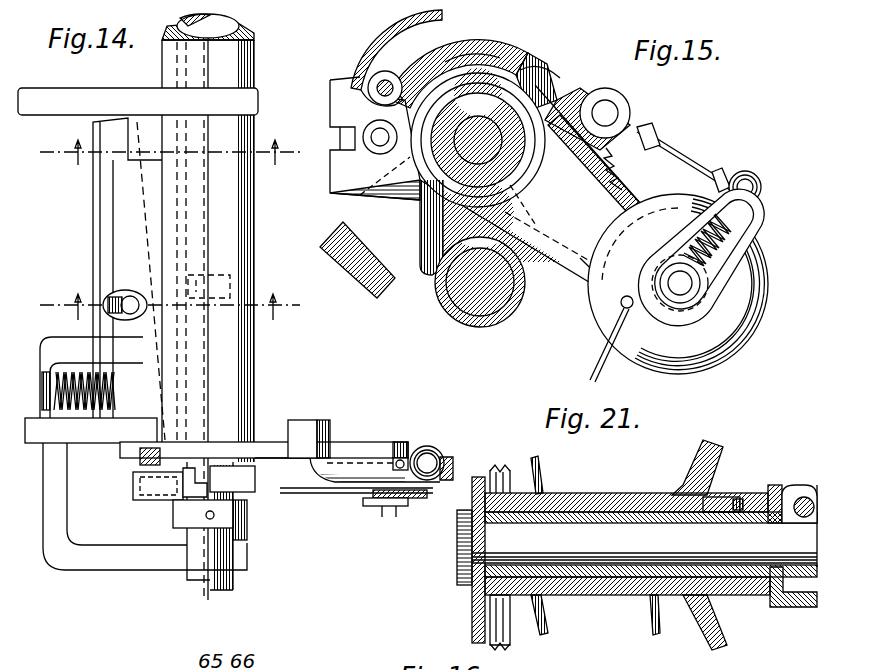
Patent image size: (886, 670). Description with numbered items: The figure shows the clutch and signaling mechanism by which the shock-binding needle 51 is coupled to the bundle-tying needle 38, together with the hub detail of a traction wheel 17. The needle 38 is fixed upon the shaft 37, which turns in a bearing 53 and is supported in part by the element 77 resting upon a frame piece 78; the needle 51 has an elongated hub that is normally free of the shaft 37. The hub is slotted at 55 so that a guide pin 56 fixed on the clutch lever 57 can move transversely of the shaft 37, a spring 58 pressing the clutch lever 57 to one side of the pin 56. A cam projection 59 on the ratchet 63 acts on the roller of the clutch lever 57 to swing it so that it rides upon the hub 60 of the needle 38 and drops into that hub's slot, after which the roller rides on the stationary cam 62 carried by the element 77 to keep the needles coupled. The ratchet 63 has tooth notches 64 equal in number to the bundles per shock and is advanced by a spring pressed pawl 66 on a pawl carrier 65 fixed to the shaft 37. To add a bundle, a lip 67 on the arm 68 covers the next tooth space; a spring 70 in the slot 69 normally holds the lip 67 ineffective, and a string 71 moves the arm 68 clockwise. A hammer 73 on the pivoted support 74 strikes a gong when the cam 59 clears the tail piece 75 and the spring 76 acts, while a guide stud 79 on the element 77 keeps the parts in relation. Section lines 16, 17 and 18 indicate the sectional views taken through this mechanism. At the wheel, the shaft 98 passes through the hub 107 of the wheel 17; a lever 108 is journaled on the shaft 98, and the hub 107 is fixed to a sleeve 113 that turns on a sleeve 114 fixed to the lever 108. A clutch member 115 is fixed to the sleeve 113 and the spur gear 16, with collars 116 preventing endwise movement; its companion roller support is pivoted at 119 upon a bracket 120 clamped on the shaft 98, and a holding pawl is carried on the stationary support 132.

In FIG. 14, the spur gear 16 is at (232, 60).
In FIG. 21, the spur gear 16 is at (512, 474).
In FIG. 14, the traction wheel 17 is at (173, 151).
In FIG. 21, the traction wheel 17 is at (546, 460).
In FIG. 14, the beveled gearing 18 is at (173, 305).
In FIG. 14, the shaft 37 is at (240, 22).
In FIG. 15, the shaft 37 is at (497, 142).
In FIG. 14, the needle 38 is at (73, 98).
In FIG. 14, the needle 51 is at (78, 434).
In FIG. 14, the bearing 53 is at (250, 66).
In FIG. 14, the slot 55 is at (115, 300).
In FIG. 14, the guide pin 56 is at (128, 300).
In FIG. 14, the clutch lever 57 is at (100, 210).
In FIG. 14, the spring 58 is at (198, 240).
In FIG. 14, the cam projection 59 is at (225, 470).
In FIG. 15, the cam projection 59 is at (545, 76).
In FIG. 14, the hub 60 is at (247, 132).
In FIG. 15, the stationary cam 62 is at (470, 62).
In FIG. 14, the ratchet 63 is at (256, 481).
In FIG. 14, the tooth notch 64 is at (248, 514).
In FIG. 15, the tooth notch 64 is at (417, 183).
In FIG. 14, the pawl carrier 65 is at (145, 500).
In FIG. 15, the pawl carrier 65 is at (396, 47).
In FIG. 14, the spring pressed pawl 66 is at (200, 485).
In FIG. 15, the spring pressed pawl 66 is at (440, 62).
In FIG. 14, the lip 67 is at (202, 500).
In FIG. 15, the lip 67 is at (350, 100).
In FIG. 14, the arm 68 is at (217, 442).
In FIG. 15, the arm 68 is at (515, 60).
In FIG. 15, the slot 69 is at (724, 236).
In FIG. 14, the spring 70 is at (382, 508).
In FIG. 15, the spring 70 is at (712, 250).
In FIG. 15, the string 71 is at (596, 380).
In FIG. 14, the hammer 73 is at (430, 450).
In FIG. 15, the hammer 73 is at (758, 182).
In FIG. 14, the pivoted support 74 is at (337, 458).
In FIG. 15, the pivoted support 74 is at (652, 132).
In FIG. 14, the tail piece 75 is at (277, 458).
In FIG. 15, the tail piece 75 is at (545, 262).
In FIG. 15, the spring 76 is at (623, 155).
In FIG. 14, the element 77 is at (274, 446).
In FIG. 15, the element 77 is at (418, 230).
In FIG. 15, the frame piece 78 is at (484, 322).
In FIG. 14, the guide stud 79 is at (395, 505).
In FIG. 15, the guide stud 79 is at (664, 280).
In FIG. 21, the shaft 98 is at (690, 540).
In FIG. 21, the hub 107 is at (598, 502).
In FIG. 21, the lever 108 is at (472, 612).
In FIG. 21, the sleeve 113 is at (630, 582).
In FIG. 21, the sleeve 114 is at (562, 570).
In FIG. 21, the clutch member 115 is at (690, 446).
In FIG. 21, the collar 116 is at (460, 552).
In FIG. 21, the pivot 119 is at (804, 496).
In FIG. 21, the bracket 120 is at (804, 520).
In FIG. 21, the stationary support 132 is at (768, 600).